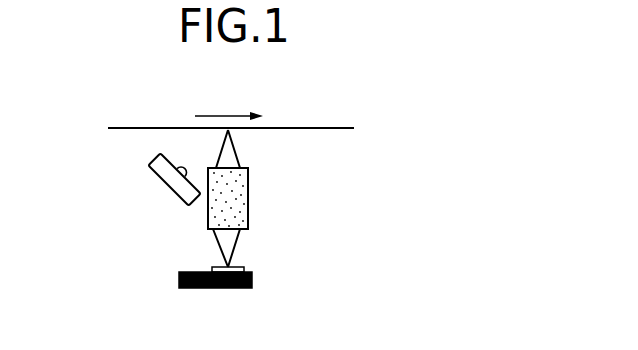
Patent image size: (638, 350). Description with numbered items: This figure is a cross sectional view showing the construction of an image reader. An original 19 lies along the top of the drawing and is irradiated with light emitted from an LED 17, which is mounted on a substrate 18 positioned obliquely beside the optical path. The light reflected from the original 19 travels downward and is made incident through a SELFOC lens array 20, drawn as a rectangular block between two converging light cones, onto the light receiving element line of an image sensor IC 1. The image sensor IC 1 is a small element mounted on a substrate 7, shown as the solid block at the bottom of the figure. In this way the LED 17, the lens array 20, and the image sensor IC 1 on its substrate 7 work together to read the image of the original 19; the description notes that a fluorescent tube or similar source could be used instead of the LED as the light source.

The image sensor IC 1 is at (243, 267).
The substrate 7 is at (252, 282).
The LED 17 is at (181, 167).
The substrate 18 is at (158, 178).
The original 19 is at (314, 128).
The SELFOC lens array 20 is at (248, 178).